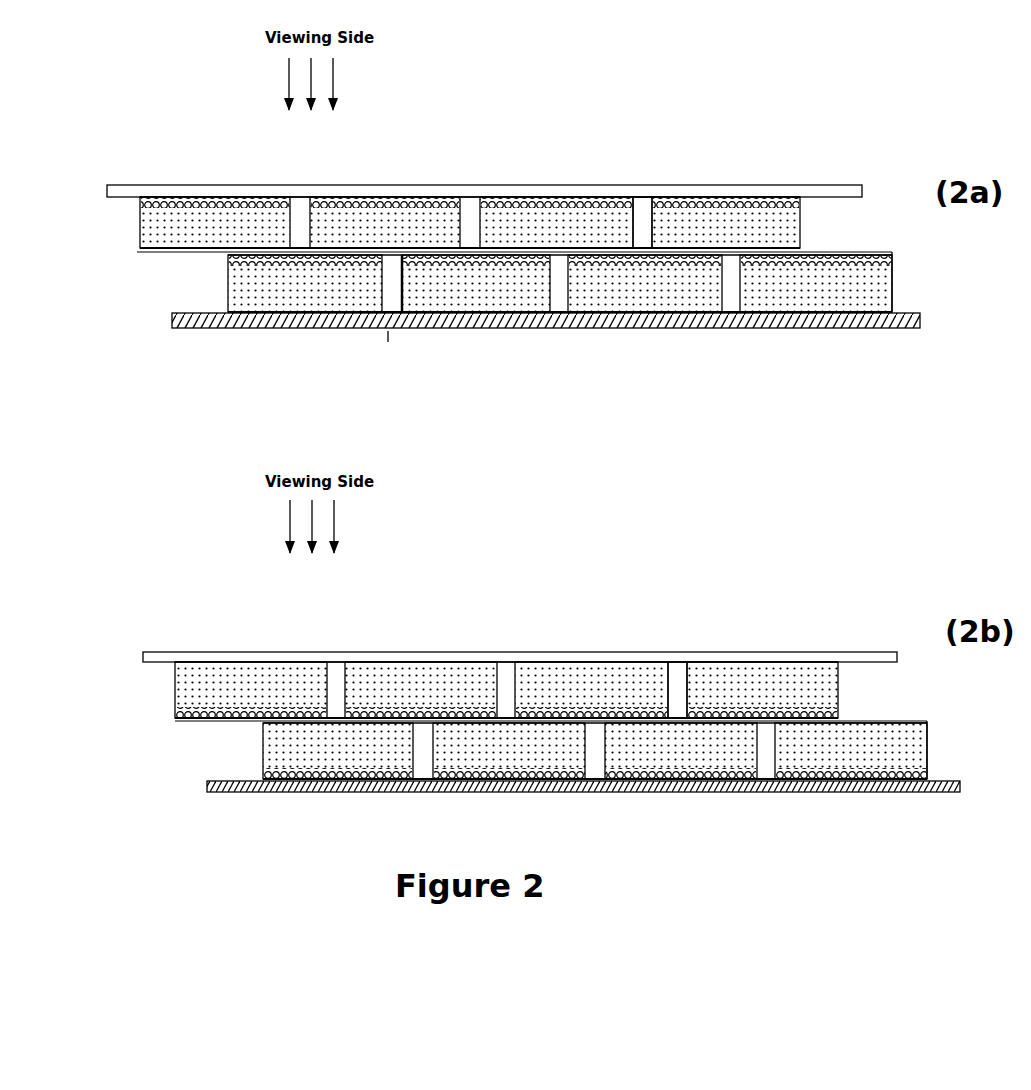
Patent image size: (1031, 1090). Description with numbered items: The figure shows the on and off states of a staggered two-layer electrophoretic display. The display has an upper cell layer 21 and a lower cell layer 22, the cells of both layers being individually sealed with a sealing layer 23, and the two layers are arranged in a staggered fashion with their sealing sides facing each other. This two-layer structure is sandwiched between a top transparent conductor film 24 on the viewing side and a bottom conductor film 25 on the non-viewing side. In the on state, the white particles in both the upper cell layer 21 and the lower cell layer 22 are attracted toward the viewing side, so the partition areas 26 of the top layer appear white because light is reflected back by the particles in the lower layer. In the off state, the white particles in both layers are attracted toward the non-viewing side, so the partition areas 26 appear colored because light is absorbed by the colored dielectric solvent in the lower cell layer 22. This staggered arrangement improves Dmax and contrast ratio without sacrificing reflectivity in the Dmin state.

In FIG. 2a, the upper cell layer 21 is at (380, 222).
In FIG. 2b, the upper cell layer 21 is at (818, 678).
In FIG. 2a, the lower cell layer 22 is at (483, 283).
In FIG. 2b, the lower cell layer 22 is at (518, 752).
In FIG. 2a, the sealing layer 23 is at (225, 255).
In FIG. 2b, the sealing layer 23 is at (255, 723).
In FIG. 2a, the top transparent conductor film 24 is at (185, 186).
In FIG. 2b, the top transparent conductor film 24 is at (218, 656).
In FIG. 2a, the bottom conductor film 25 is at (193, 326).
In FIG. 2b, the bottom conductor film 25 is at (228, 790).
In FIG. 2a, the partition areas 26 is at (642, 222).
In FIG. 2b, the partition areas 26 is at (678, 668).